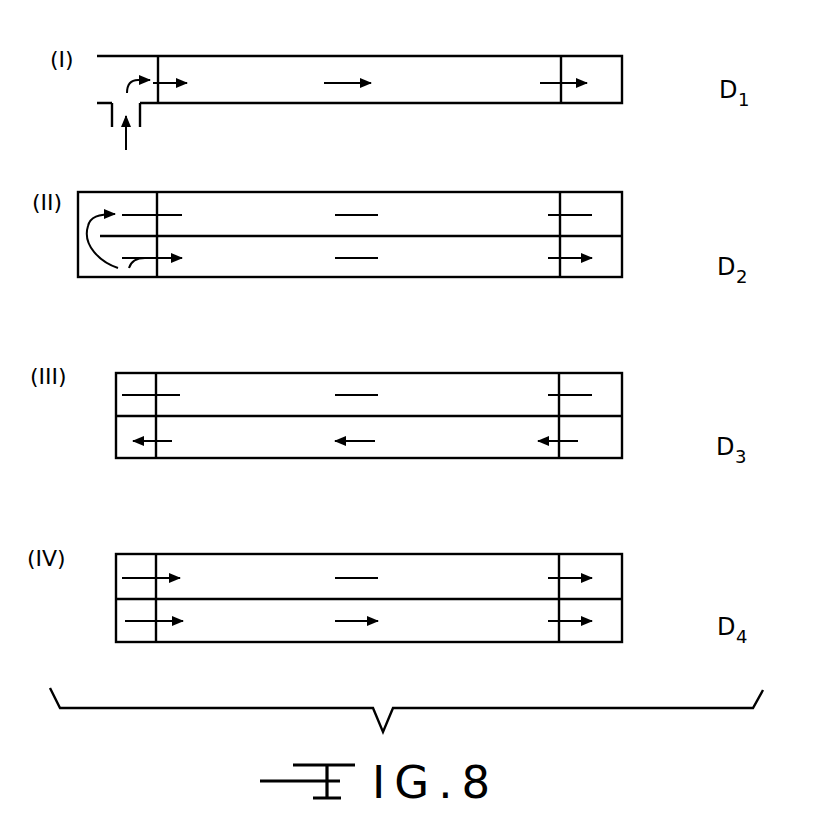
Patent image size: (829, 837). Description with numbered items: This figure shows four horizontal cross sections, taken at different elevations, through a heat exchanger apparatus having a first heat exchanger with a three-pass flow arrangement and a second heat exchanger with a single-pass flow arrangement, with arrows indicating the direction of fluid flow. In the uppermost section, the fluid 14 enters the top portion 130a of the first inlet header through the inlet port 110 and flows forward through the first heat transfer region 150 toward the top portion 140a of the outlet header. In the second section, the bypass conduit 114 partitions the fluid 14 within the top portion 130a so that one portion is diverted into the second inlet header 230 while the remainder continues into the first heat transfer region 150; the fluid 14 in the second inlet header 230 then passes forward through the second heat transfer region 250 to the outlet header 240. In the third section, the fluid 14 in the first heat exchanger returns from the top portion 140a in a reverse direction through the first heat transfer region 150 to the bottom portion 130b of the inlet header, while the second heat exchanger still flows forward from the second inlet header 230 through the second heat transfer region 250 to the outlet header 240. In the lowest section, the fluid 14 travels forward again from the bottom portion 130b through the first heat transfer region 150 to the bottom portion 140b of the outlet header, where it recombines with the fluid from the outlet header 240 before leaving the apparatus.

The fluid 14 is at (113, 140).
The inlet port 110 is at (142, 118).
The bypass conduit 114 is at (105, 283).
The top portion of first inlet header 130a is at (128, 56).
The bottom portion of inlet header 130b is at (128, 458).
The top portion of outlet header 140a is at (585, 56).
The bottom portion of outlet header 140b is at (592, 642).
The first heat transfer region 150 is at (337, 56).
The second inlet header 230 is at (127, 192).
The outlet header 240 is at (573, 192).
The second heat transfer region 250 is at (350, 192).